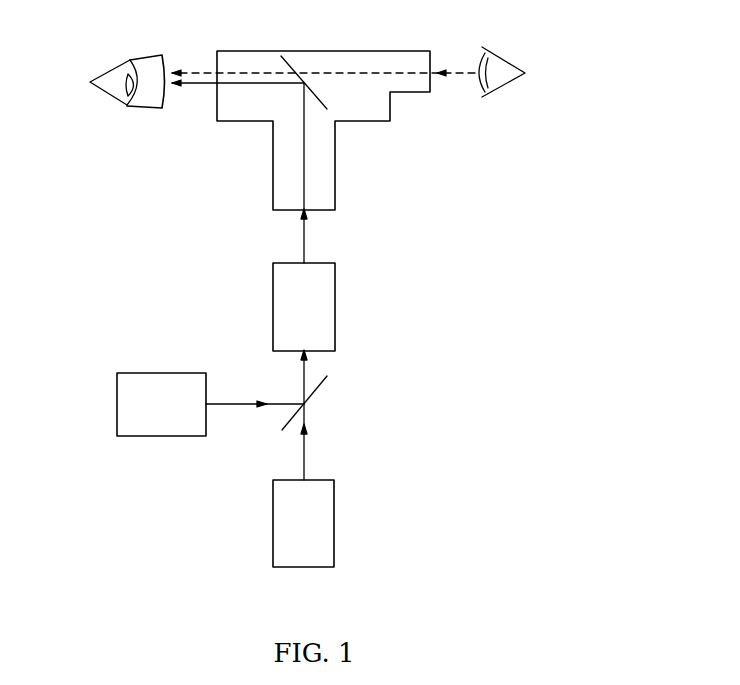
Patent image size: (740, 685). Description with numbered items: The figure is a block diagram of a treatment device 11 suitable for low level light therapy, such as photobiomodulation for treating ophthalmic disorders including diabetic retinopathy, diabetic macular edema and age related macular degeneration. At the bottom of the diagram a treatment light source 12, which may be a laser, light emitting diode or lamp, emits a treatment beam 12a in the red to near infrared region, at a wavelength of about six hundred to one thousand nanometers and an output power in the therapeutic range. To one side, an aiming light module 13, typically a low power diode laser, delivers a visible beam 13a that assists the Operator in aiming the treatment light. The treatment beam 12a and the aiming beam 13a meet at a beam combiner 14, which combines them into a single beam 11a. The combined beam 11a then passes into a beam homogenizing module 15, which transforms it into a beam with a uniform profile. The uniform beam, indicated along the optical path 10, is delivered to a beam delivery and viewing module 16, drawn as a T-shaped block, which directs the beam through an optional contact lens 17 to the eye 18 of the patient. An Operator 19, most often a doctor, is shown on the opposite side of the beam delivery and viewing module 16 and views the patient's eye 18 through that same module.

The optical path / output beam 10 is at (307, 234).
The treatment device 11 is at (128, 275).
The single beam 11a is at (300, 378).
The treatment light source 12 is at (303, 523).
The treatment beam 12a is at (305, 447).
The aiming light module 13 is at (161, 404).
The visible beam 13a is at (245, 403).
The beam combiner 14 is at (315, 387).
The beam homogenizing module 15 is at (304, 307).
The beam delivery and viewing module 16 is at (323, 130).
The contact lens 17 is at (104, 106).
The eye 18 is at (120, 100).
The Operator 19 is at (497, 92).